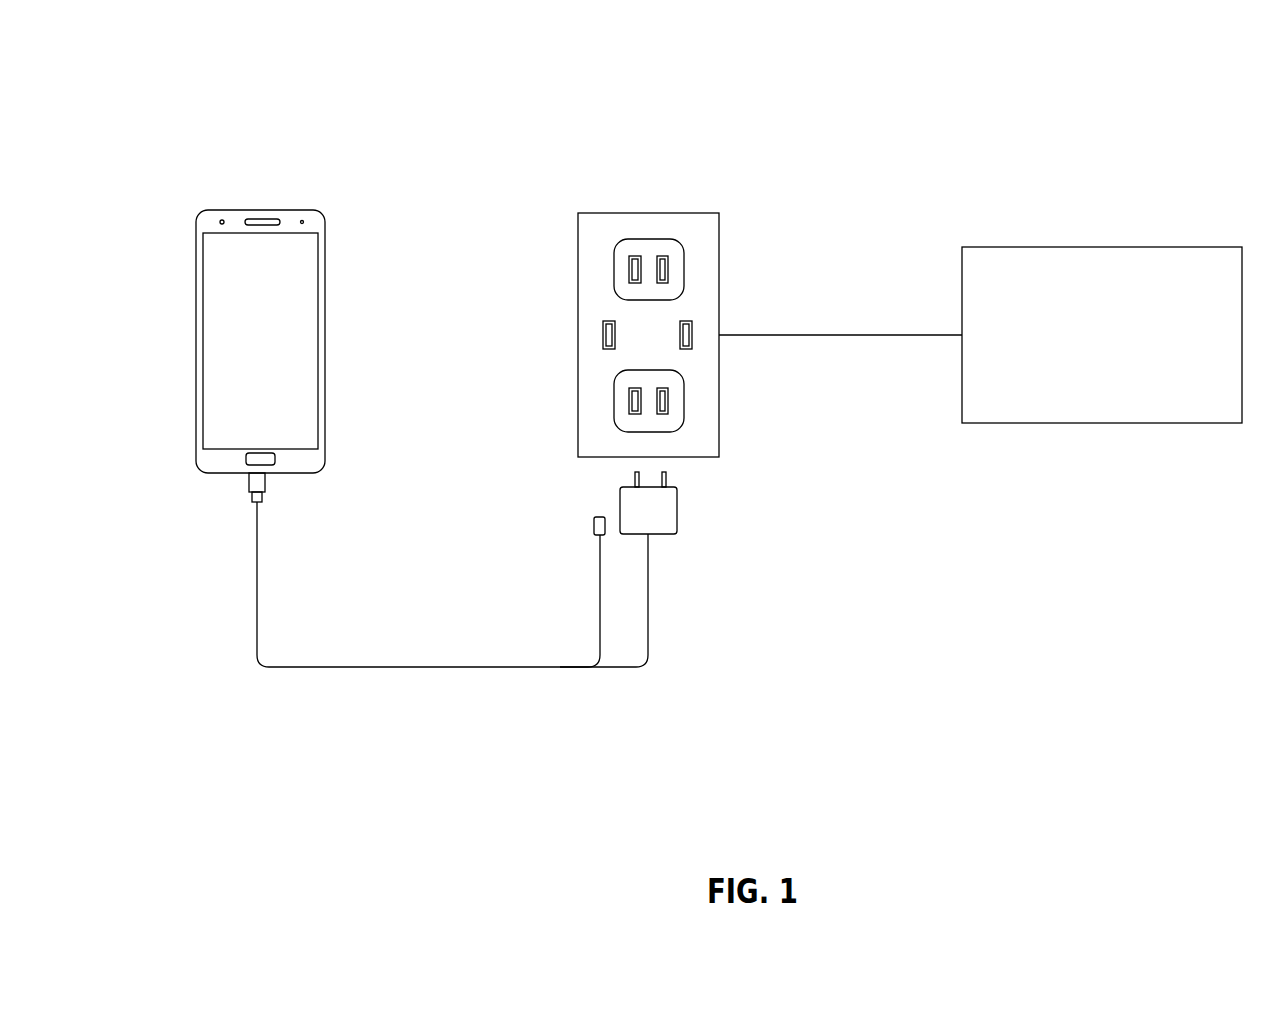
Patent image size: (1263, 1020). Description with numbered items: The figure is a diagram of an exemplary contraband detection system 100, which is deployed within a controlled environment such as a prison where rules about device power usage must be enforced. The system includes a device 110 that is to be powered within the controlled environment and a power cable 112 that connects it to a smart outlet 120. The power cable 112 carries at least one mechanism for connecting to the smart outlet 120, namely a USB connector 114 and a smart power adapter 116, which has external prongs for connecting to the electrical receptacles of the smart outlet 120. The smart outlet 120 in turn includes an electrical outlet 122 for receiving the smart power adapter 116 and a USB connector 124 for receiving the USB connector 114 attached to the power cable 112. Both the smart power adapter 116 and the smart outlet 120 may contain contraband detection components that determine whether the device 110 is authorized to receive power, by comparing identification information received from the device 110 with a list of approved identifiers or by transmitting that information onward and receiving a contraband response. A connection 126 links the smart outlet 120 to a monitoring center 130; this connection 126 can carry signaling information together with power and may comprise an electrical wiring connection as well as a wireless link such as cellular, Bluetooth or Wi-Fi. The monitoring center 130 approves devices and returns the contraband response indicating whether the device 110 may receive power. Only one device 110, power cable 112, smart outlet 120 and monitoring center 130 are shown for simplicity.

The contraband detection system 100 is at (882, 72).
The device 110 is at (257, 210).
The power cable 112 is at (418, 666).
The USB connector 114 is at (594, 519).
The smart power adapter 116 is at (677, 510).
The smart outlet 120 is at (615, 300).
The electrical outlet 122 is at (614, 277).
The USB connector 124 is at (603, 342).
The connection 126 is at (877, 334).
The monitoring center 130 is at (1102, 335).